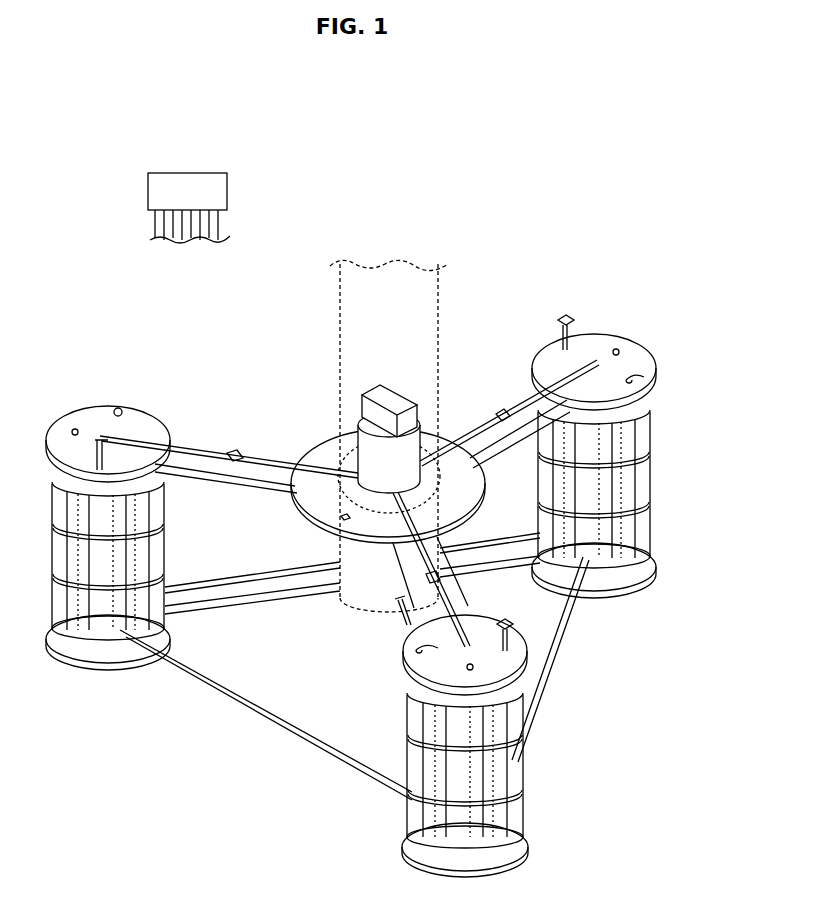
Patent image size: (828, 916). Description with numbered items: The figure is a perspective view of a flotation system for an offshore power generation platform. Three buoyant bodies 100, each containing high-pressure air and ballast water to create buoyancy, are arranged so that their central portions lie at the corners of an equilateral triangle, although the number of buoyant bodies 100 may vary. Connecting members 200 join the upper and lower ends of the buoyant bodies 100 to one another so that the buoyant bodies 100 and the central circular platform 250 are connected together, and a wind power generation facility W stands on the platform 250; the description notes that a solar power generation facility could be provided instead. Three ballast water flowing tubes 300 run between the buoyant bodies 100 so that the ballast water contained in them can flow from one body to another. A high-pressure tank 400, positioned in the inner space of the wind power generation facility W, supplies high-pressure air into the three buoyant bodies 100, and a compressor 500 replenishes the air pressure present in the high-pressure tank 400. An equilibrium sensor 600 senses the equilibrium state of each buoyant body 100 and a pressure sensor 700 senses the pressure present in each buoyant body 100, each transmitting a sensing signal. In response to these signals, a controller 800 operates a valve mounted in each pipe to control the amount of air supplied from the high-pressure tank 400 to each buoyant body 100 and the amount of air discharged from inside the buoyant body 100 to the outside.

The buoyant body 100 is at (151, 400).
The connecting member 200 is at (205, 440).
The platform 250 is at (300, 490).
The ballast water flowing tube 300 is at (212, 585).
The high-pressure tank 400 is at (365, 445).
The compressor 500 is at (390, 400).
The equilibrium sensor 600 is at (75, 429).
The pressure sensor 700 is at (118, 412).
The controller 800 is at (229, 192).
The wind power generation facility W is at (392, 268).